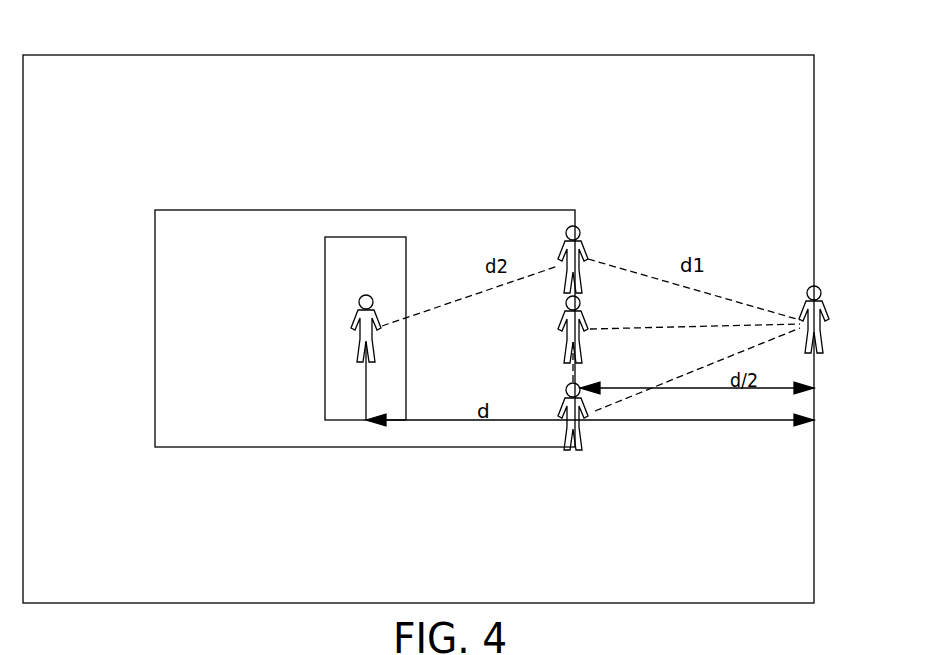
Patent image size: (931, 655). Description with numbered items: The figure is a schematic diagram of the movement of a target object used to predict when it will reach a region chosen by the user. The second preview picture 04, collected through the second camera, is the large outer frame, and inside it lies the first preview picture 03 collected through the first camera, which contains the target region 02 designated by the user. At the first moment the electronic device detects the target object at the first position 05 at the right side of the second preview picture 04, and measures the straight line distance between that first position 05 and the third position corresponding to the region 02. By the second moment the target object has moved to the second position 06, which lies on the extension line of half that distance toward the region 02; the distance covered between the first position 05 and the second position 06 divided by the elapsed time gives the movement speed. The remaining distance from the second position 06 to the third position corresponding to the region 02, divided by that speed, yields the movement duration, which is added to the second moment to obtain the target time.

The target region designated by a user 02 is at (325, 315).
The first preview picture 03 is at (420, 210).
The second preview picture 04 is at (683, 55).
The first position of the target object 05 is at (825, 303).
The position of the target object at the second moment 06 is at (585, 243).